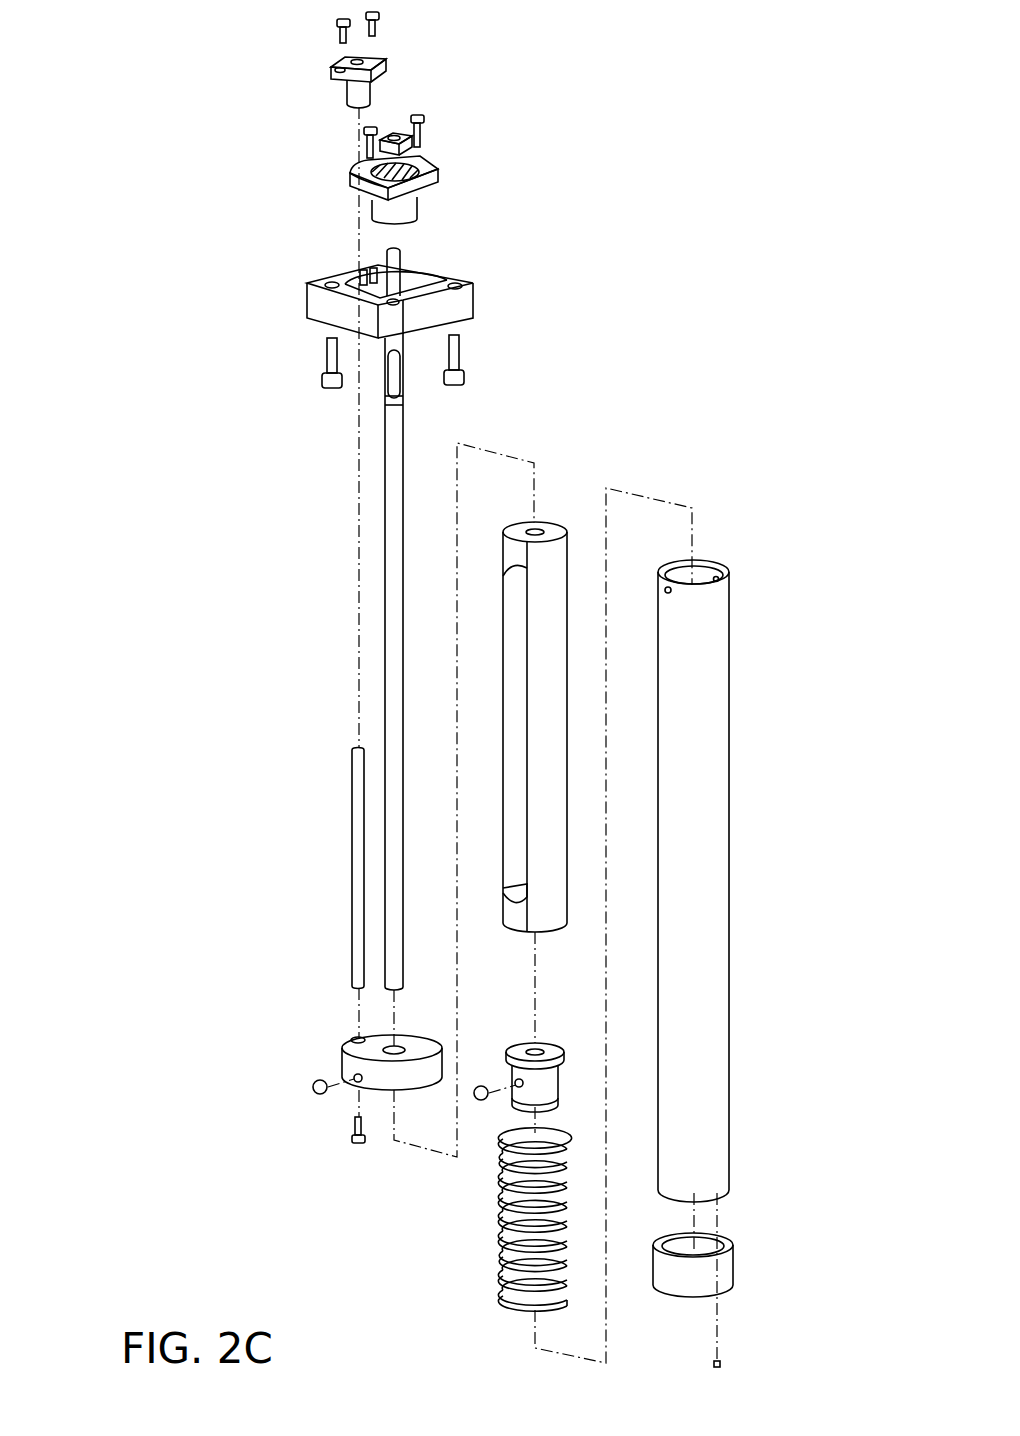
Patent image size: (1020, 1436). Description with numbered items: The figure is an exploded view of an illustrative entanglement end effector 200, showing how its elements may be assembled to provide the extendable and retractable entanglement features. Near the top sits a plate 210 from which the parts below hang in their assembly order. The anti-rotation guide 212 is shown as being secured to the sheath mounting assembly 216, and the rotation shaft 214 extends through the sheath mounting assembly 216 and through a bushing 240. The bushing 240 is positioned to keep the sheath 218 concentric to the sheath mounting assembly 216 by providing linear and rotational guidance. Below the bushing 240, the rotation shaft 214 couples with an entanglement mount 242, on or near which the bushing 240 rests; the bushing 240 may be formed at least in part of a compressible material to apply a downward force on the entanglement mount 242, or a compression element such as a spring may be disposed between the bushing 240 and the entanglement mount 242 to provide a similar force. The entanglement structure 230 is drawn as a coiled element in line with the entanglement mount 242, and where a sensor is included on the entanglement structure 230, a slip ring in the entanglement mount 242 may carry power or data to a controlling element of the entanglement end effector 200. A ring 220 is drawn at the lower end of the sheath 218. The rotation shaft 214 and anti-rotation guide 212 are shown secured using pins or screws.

The entanglement end effector 200 is at (145, 70).
The mounting plate 210 is at (470, 300).
The anti-rotation guide 212 is at (350, 952).
The rotation shaft 214 is at (402, 622).
The sheath mounting assembly 216 is at (348, 1063).
The sheath 218 is at (725, 628).
The end ring 220 is at (732, 1258).
The entanglement structure 230 is at (508, 1268).
The bushing 240 is at (557, 527).
The entanglement mount 242 is at (537, 1044).